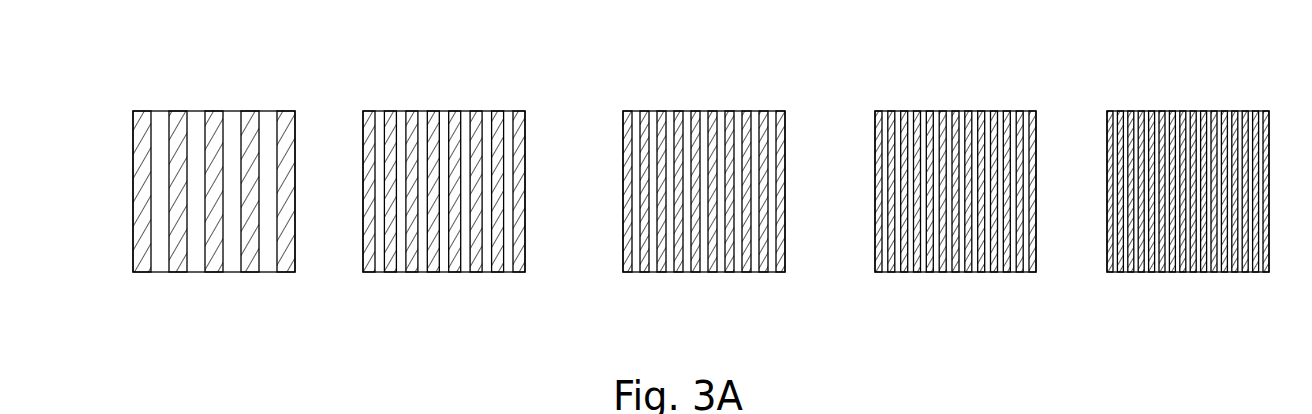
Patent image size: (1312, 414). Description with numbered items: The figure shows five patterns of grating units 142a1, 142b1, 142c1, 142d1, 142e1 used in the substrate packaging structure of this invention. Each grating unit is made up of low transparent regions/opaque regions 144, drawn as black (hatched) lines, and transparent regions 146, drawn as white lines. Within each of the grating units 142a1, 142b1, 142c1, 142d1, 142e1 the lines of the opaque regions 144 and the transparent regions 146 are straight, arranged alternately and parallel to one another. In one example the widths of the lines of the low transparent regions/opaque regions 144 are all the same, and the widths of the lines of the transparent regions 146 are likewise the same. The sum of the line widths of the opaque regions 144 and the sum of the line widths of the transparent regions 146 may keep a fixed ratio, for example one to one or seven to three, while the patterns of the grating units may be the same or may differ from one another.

The low transparent regions/opaque regions 144 is at (137, 111).
The transparent regions 146 is at (196, 118).
The grating unit 142a1 is at (214, 213).
The grating unit 142b1 is at (444, 213).
The grating unit 142c1 is at (704, 213).
The grating unit 142d1 is at (955, 213).
The grating unit 142e1 is at (1188, 213).